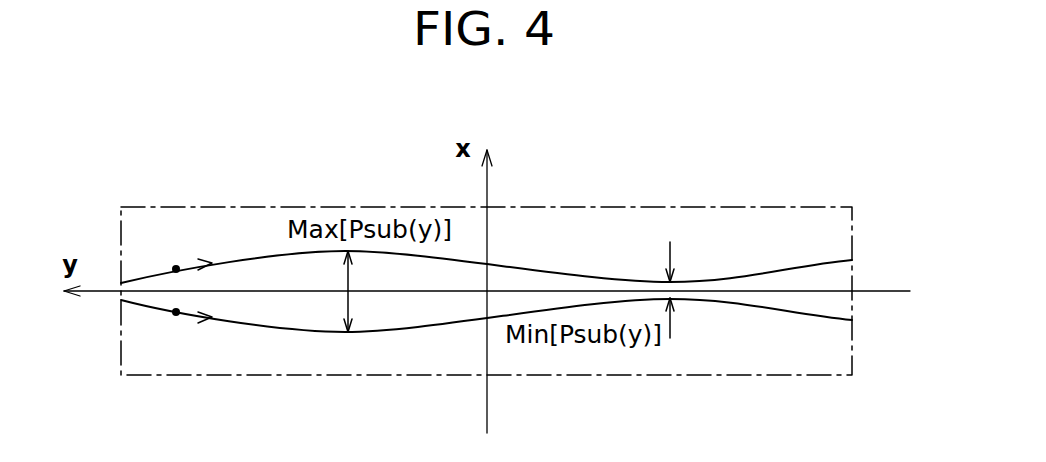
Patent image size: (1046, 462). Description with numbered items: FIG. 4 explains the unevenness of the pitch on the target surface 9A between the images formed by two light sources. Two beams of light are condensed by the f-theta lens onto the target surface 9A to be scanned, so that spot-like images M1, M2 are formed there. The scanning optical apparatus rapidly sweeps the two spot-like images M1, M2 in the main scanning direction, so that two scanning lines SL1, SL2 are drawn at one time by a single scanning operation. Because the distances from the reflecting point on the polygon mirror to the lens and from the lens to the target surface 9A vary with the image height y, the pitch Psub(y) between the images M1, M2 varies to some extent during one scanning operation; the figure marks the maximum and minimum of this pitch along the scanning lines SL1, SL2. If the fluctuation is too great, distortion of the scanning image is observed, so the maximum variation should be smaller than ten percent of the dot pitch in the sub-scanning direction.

The target surface 9A is at (810, 220).
The scanning line SL1 is at (728, 300).
The scanning line SL2 is at (728, 277).
The spot-like image M1 is at (176, 315).
The spot-like image M2 is at (176, 266).